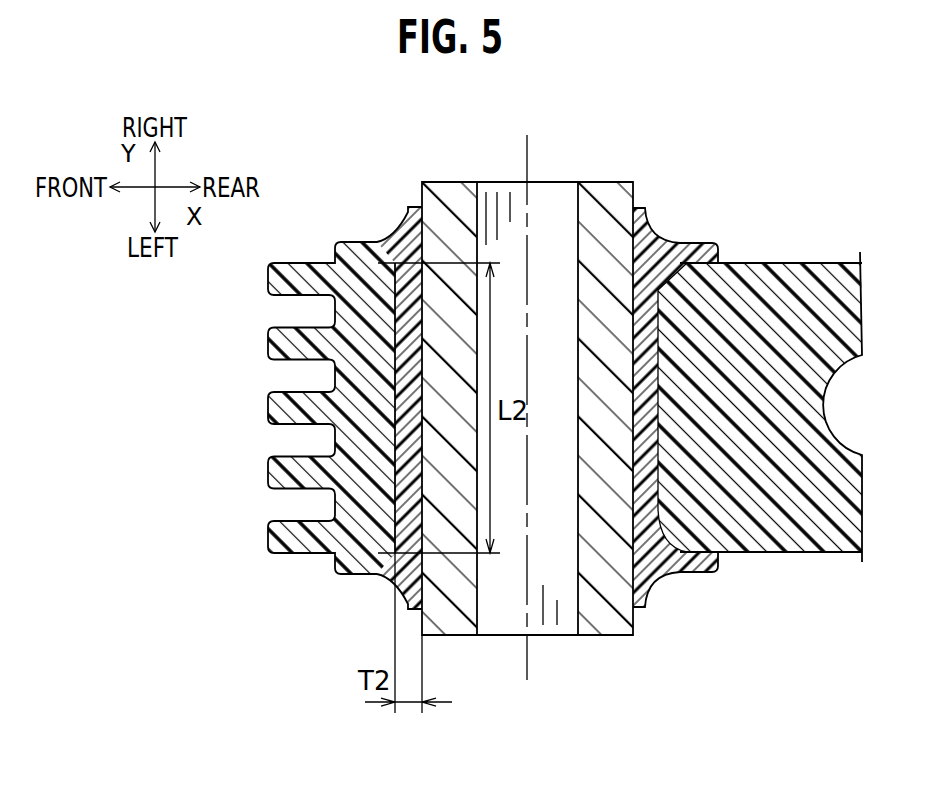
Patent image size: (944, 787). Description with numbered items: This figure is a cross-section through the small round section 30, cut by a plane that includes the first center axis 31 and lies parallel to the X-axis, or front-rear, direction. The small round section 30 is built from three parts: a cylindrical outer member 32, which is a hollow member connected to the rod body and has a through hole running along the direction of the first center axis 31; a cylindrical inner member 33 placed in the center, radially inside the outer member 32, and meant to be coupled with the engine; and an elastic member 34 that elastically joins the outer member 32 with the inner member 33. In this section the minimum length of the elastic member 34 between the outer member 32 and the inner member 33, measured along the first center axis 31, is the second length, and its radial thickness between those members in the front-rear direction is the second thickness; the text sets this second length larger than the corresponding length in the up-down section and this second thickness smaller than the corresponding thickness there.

The small round section 30 is at (437, 122).
The first center axis 31 is at (527, 150).
The outer member 32 is at (300, 263).
The inner member 33 is at (448, 195).
The elastic member 34 is at (408, 285).